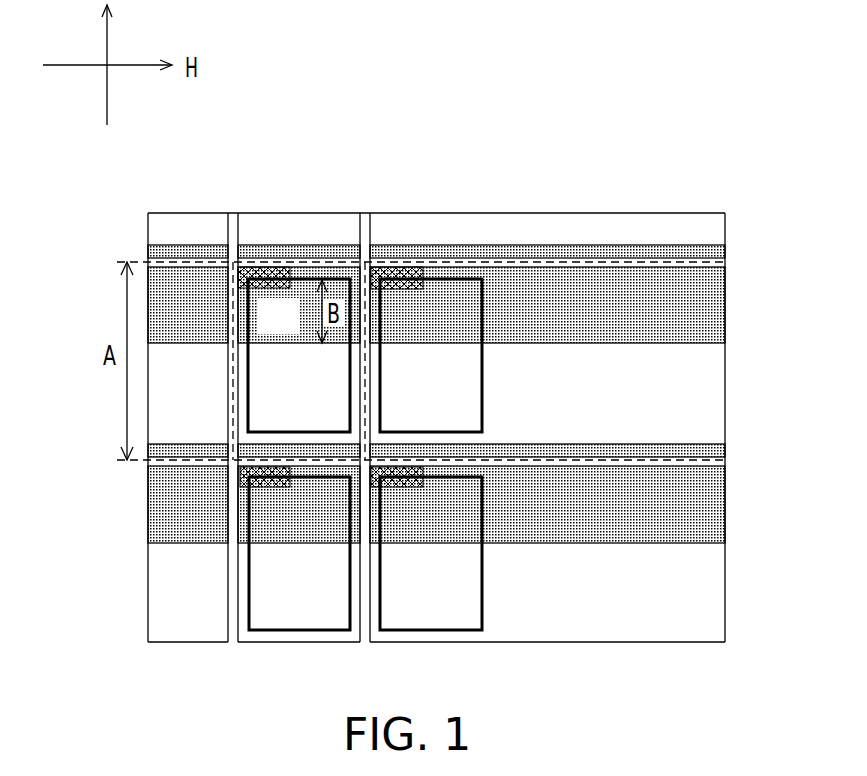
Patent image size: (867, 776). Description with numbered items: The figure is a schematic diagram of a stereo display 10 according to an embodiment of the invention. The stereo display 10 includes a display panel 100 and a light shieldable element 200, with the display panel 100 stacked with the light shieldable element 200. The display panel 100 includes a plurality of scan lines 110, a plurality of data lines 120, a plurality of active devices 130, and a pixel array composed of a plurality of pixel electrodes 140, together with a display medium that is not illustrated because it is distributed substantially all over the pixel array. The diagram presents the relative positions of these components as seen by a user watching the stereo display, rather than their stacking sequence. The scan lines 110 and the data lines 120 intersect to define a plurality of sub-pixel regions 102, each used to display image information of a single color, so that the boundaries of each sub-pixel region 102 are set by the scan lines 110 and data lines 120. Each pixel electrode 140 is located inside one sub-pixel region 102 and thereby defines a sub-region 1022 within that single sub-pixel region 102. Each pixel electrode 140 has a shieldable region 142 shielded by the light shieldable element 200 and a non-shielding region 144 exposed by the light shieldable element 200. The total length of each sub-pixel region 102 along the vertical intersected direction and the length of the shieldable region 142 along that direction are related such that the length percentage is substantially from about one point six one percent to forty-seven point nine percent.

The stereo display 10 is at (785, 710).
The display panel 100 is at (693, 577).
The sub-pixel region 102 is at (298, 263).
The sub-region 1022 is at (350, 397).
The scan line 110 is at (163, 260).
The data line 120 is at (230, 225).
The active device 130 is at (255, 277).
The pixel electrode 140 is at (405, 268).
The shieldable region 142 is at (297, 330).
The non-shielding region 144 is at (298, 405).
The light shieldable element 200 is at (740, 247).